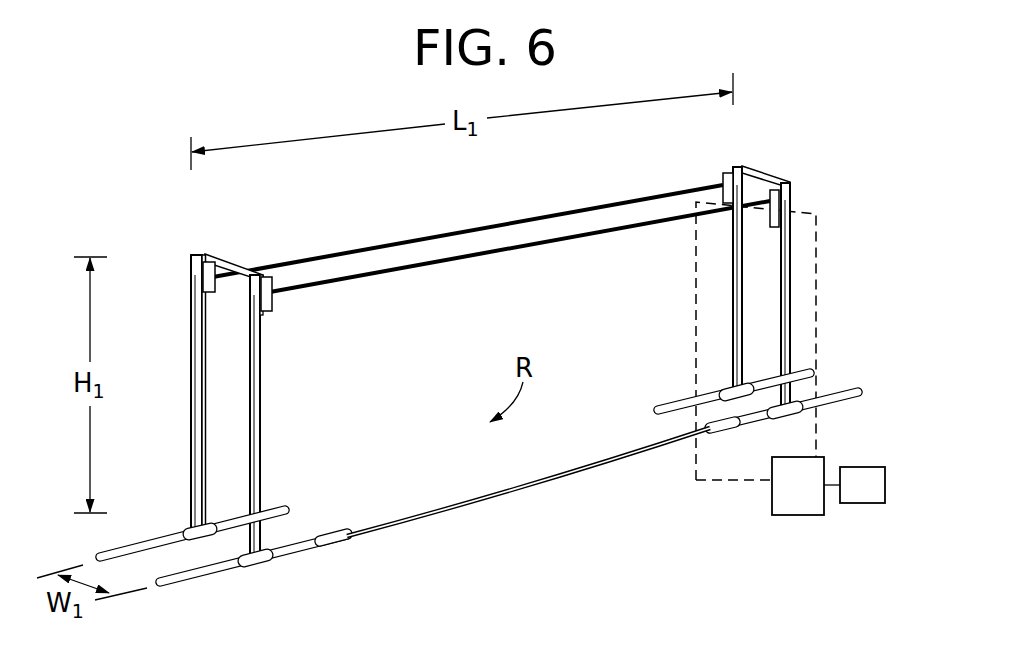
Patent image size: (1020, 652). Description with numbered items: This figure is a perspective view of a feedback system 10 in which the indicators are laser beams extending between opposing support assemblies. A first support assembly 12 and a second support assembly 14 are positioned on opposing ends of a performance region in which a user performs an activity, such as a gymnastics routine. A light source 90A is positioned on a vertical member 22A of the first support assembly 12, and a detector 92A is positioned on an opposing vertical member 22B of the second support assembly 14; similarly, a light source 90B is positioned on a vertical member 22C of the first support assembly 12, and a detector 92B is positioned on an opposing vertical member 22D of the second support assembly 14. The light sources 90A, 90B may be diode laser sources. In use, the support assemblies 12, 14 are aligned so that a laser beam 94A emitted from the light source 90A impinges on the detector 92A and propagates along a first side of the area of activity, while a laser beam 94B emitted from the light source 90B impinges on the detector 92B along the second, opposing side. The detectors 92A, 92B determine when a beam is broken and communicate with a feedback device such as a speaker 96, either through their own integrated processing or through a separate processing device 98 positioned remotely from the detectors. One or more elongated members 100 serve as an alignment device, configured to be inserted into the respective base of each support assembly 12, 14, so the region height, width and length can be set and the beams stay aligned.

The feedback system 10 is at (197, 206).
The first support assembly 12 is at (184, 450).
The second support assembly 14 is at (828, 214).
The vertical member 22A is at (193, 385).
The vertical member 22B is at (732, 348).
The vertical member 22C is at (259, 401).
The vertical member 22D is at (790, 342).
The light source 90A is at (212, 293).
The light source 90B is at (272, 302).
The detector 92A is at (729, 172).
The detector 92B is at (777, 187).
The laser beam 94A is at (373, 248).
The laser beam 94B is at (430, 267).
The speaker 96 is at (882, 504).
The processing device 98 is at (771, 498).
The elongated member 100 is at (551, 484).